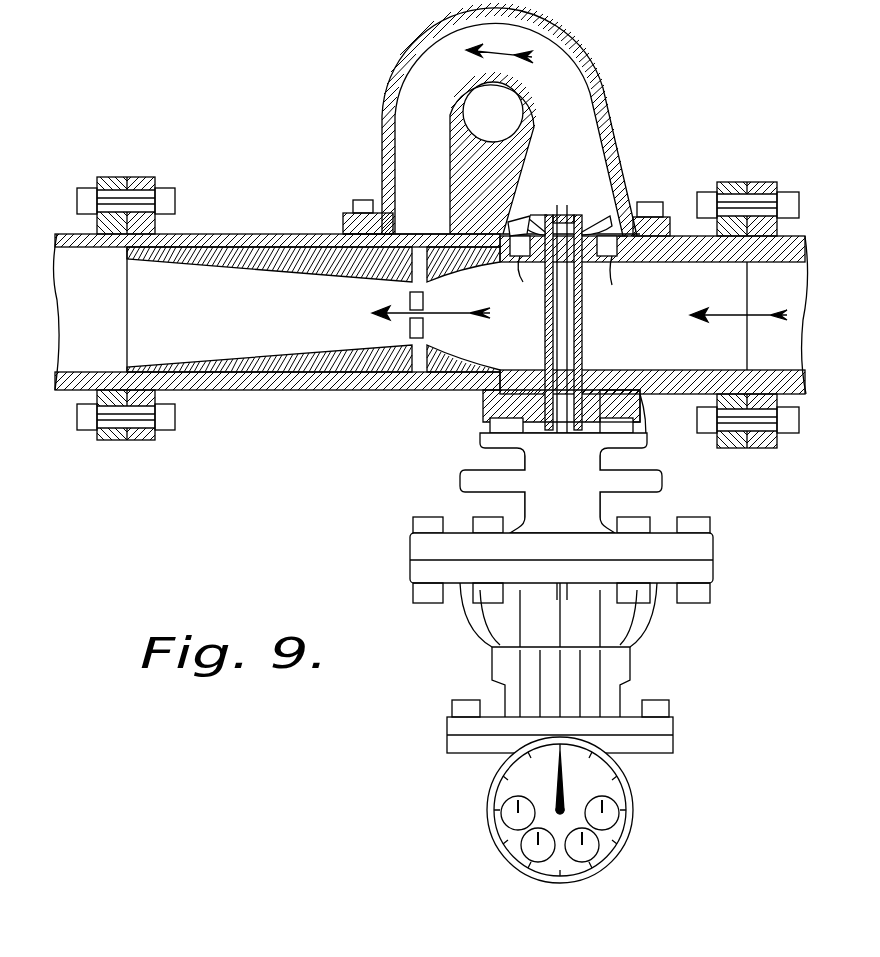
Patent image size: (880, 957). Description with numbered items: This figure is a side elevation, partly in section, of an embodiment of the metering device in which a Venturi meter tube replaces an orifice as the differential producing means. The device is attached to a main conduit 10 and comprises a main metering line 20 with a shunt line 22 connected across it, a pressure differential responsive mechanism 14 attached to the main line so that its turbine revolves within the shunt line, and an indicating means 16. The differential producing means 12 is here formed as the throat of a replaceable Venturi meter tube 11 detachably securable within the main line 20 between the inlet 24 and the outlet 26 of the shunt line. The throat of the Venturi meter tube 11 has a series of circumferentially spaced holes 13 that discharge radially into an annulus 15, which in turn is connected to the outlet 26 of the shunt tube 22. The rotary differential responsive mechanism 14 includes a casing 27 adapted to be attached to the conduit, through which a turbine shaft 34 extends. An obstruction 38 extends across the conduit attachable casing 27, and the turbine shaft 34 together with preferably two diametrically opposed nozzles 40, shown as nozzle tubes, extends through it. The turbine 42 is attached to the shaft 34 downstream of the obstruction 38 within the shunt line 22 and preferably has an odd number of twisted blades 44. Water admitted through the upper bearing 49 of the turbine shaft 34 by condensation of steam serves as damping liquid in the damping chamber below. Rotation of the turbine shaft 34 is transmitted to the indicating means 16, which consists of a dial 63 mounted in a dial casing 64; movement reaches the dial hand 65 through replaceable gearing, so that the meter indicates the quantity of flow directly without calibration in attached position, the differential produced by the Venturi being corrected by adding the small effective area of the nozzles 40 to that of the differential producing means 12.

The main conduit 10 is at (75, 390).
The Venturi meter tube 11 is at (300, 391).
The differential producing means 12 is at (340, 372).
The circumferentially spaced holes 13 is at (423, 327).
The pressure differential responsive mechanism 14 is at (645, 506).
The annulus 15 is at (415, 355).
The indicating means 16 is at (636, 770).
The main metering line 20 is at (262, 234).
The shunt line 22 is at (605, 110).
The inlet of the shunt line 24 is at (645, 203).
The outlet of the shunt line 26 is at (407, 230).
The casing 27 is at (653, 395).
The turbine shaft 34 is at (560, 384).
The obstruction 38 is at (627, 215).
The nozzles 40 is at (585, 262).
The turbine 42 is at (600, 215).
The blades 44 is at (520, 216).
The upper bearing 49 is at (533, 214).
The dial 63 is at (540, 830).
The dial casing 64 is at (634, 800).
The dial hand 65 is at (556, 776).